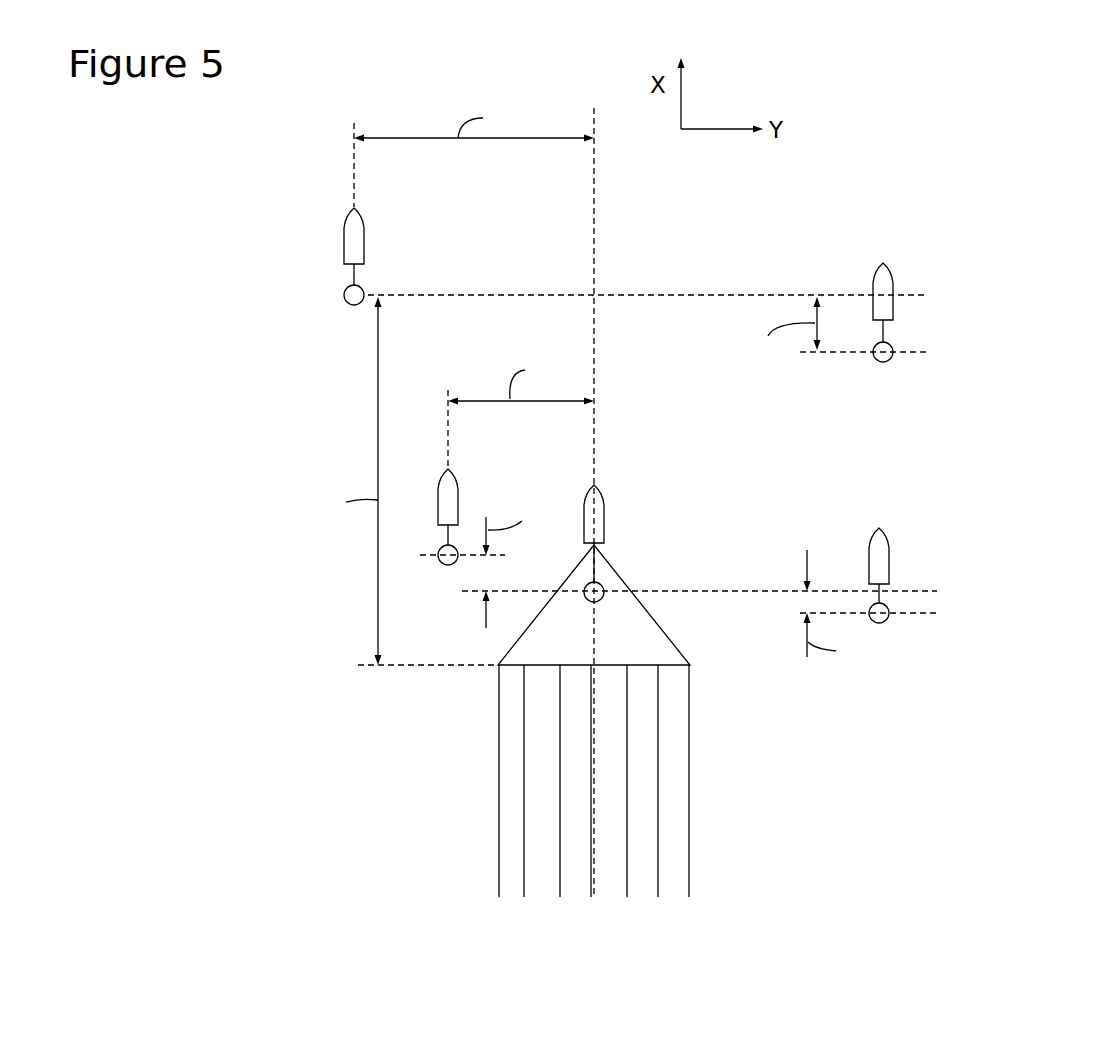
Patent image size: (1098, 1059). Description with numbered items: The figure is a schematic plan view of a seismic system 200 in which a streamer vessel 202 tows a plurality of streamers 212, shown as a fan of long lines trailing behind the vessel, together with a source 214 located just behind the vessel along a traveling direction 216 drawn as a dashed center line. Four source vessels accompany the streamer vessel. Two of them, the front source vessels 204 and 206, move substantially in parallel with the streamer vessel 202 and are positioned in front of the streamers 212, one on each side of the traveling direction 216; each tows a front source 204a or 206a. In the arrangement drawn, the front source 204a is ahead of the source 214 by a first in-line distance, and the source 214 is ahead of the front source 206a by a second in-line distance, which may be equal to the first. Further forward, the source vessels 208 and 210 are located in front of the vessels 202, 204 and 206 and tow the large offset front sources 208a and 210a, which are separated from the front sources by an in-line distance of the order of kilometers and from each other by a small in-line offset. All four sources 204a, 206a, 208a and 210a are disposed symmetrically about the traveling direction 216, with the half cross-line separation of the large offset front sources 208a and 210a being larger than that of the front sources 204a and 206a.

The seismic system 200 is at (1072, 488).
The streamer vessel 202 is at (603, 497).
The source vessel 204 is at (445, 498).
The front source 204a is at (442, 562).
The source vessel 206 is at (891, 562).
The front source 206a is at (887, 618).
The source vessel 208 is at (345, 237).
The large offset front source 208a is at (346, 302).
The source vessel 210 is at (886, 270).
The large offset front source 210a is at (890, 360).
The streamers 212 is at (690, 822).
The source 214 is at (601, 584).
The traveling direction 216 is at (597, 357).